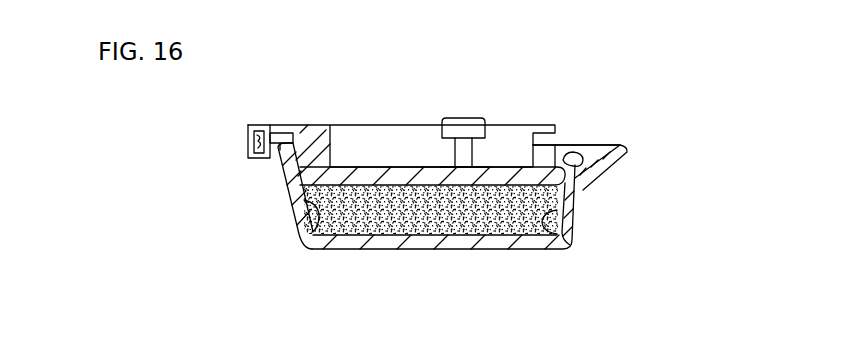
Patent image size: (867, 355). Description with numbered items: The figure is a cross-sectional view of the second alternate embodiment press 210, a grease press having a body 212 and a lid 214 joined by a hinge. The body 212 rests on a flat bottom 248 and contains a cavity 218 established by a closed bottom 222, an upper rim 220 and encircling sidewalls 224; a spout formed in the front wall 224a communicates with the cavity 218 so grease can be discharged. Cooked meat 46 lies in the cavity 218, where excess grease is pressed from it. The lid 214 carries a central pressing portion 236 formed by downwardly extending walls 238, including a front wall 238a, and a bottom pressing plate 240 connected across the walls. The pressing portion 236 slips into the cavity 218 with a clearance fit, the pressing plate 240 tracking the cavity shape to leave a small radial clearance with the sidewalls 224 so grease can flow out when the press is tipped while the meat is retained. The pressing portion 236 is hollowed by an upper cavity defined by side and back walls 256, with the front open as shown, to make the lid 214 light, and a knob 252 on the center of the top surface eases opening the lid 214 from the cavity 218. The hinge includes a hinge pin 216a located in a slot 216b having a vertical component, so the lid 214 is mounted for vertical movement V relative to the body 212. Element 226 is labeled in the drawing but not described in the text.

The press 210 is at (556, 49).
The body 212 is at (478, 259).
The lid 214 is at (359, 118).
The hinge pin 216a is at (262, 128).
The slot 216b is at (262, 160).
The cavity 218 is at (510, 216).
The upper rim 220 is at (607, 143).
The closed bottom 222 is at (392, 220).
The sidewalls 224 is at (300, 238).
The front wall 224a is at (556, 248).
The flange tip 226 is at (577, 193).
The central pressing portion 236 is at (400, 157).
The walls 238 is at (311, 137).
The front wall 238a is at (570, 165).
The bottom pressing plate 240 is at (302, 202).
The flat bottom 248 is at (424, 251).
The knob 252 is at (475, 118).
The side and back walls 256 is at (428, 124).
The cooked meat 46 is at (318, 246).
The vertical movement V is at (222, 134).